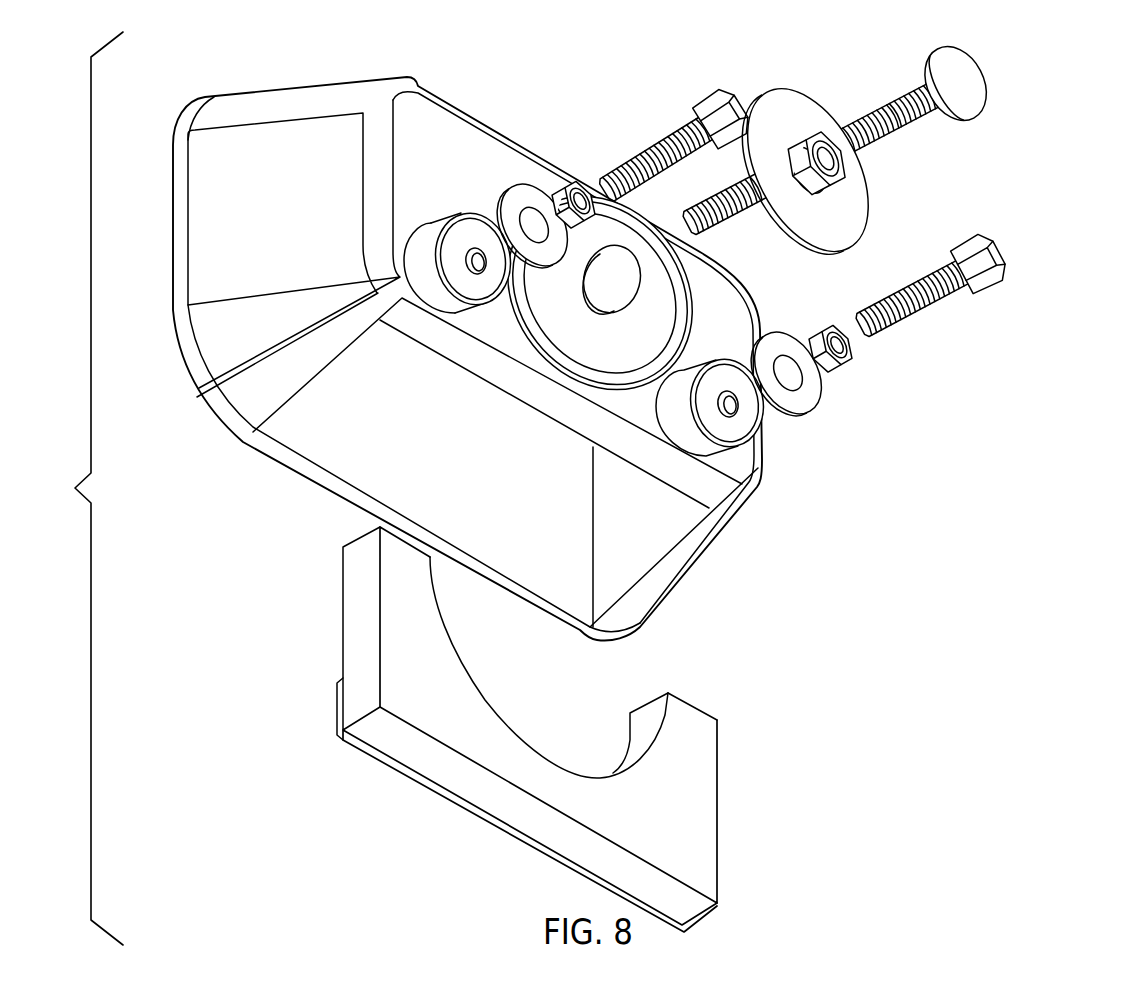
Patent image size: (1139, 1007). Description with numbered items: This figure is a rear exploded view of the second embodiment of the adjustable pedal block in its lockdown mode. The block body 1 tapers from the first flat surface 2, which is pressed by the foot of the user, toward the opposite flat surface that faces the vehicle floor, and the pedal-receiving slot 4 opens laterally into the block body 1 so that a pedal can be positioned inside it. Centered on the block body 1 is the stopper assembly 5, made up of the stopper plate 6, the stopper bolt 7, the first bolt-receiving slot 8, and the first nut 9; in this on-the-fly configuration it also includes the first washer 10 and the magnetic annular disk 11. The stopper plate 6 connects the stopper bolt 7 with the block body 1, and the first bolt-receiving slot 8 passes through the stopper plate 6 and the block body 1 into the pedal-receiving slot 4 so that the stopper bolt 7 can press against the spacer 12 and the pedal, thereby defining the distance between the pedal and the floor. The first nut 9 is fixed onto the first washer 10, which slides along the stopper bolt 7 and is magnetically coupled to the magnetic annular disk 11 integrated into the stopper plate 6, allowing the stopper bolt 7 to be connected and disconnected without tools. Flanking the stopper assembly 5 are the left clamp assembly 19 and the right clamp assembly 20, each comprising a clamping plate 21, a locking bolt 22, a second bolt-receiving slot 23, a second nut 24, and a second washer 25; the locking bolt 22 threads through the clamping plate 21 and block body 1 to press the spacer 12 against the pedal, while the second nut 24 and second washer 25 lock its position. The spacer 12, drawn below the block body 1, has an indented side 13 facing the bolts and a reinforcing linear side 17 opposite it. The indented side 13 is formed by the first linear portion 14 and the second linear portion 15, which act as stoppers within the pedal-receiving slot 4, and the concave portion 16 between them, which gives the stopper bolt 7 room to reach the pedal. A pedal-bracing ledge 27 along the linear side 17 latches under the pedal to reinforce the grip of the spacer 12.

The block body 1 is at (507, 337).
The first flat surface 2 is at (465, 120).
The pedal-receiving slot 4 is at (297, 466).
The stopper assembly 5 is at (992, 68).
The stopper plate 6 is at (597, 393).
The stopper bolt 7 is at (980, 93).
The first bolt-receiving slot 8 is at (601, 287).
The first nut 9 is at (812, 127).
The first washer 10 is at (861, 188).
The magnetic annular disk 11 is at (694, 291).
The spacer 12 is at (544, 729).
The indented side 13 is at (690, 707).
The first linear portion 14 is at (360, 537).
The second linear portion 15 is at (667, 693).
The concave portion 16 is at (630, 740).
The linear side 17 is at (327, 759).
The left clamp assembly 19 is at (450, 327).
The right clamp assembly 20 is at (720, 481).
The clamping plate 21 is at (417, 240).
The locking bolt 22 is at (660, 134).
The second bolt-receiving slot 23 is at (482, 262).
The second nut 24 is at (566, 178).
The second washer 25 is at (516, 197).
The pedal-bracing ledge 27 is at (335, 707).